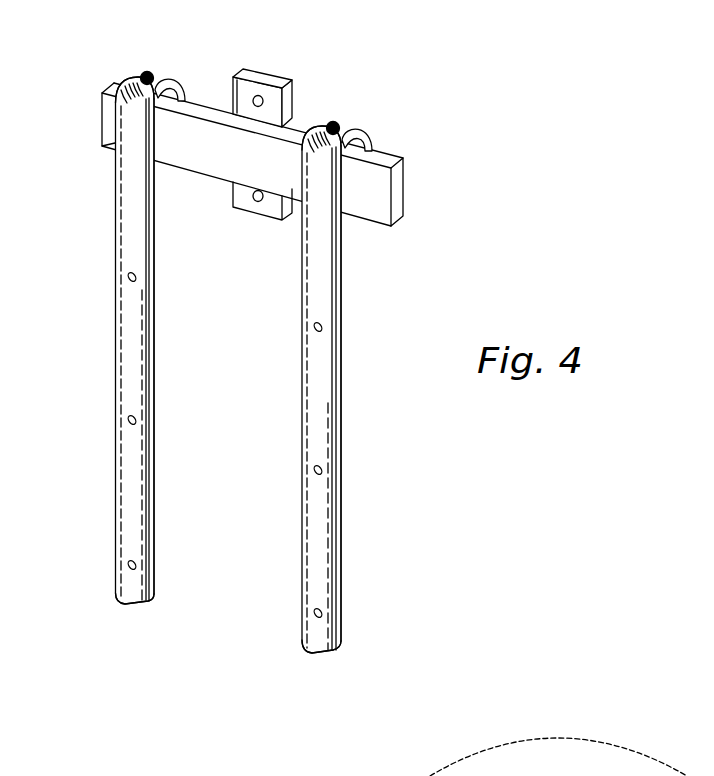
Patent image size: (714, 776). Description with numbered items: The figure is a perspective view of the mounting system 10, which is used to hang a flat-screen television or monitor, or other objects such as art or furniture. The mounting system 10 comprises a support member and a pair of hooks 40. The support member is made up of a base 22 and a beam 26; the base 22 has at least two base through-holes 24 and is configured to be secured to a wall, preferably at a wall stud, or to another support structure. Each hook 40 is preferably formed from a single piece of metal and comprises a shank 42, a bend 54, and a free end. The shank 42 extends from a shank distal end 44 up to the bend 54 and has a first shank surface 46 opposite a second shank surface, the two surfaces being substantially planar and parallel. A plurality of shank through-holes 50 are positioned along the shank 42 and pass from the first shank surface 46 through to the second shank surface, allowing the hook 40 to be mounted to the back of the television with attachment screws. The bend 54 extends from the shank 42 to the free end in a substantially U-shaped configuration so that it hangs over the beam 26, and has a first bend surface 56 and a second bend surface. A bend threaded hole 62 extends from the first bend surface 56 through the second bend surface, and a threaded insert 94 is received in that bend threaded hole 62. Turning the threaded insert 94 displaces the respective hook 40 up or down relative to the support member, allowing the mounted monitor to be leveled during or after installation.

The mounting system 10 is at (407, 127).
The base 22 is at (247, 75).
The base through-holes 24 is at (259, 95).
The beam 26 is at (110, 112).
The hook 40 is at (114, 194).
The shank 42 is at (156, 378).
The shank distal end 44 is at (130, 602).
The first shank surface 46 is at (135, 333).
The shank through-holes 50 is at (137, 419).
The bend 54 is at (122, 82).
The first bend surface 56 is at (136, 74).
The bend threaded hole 62 is at (163, 82).
The threaded insert 94 is at (147, 71).